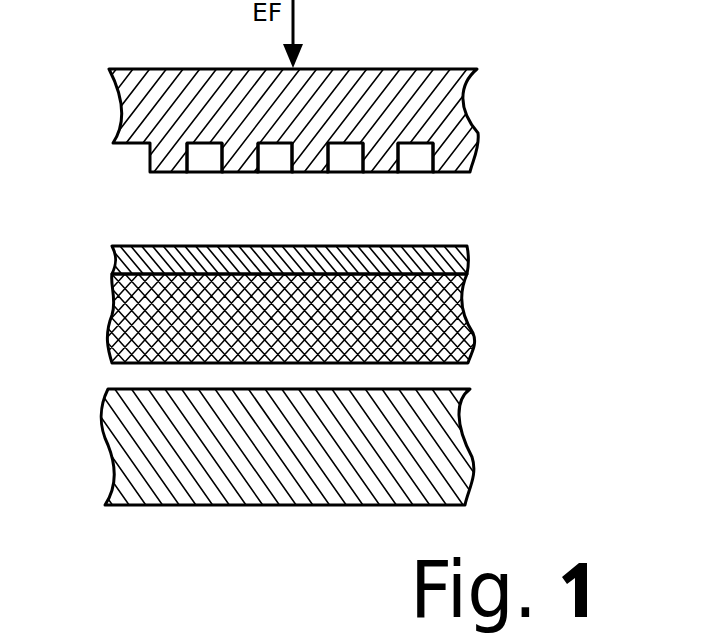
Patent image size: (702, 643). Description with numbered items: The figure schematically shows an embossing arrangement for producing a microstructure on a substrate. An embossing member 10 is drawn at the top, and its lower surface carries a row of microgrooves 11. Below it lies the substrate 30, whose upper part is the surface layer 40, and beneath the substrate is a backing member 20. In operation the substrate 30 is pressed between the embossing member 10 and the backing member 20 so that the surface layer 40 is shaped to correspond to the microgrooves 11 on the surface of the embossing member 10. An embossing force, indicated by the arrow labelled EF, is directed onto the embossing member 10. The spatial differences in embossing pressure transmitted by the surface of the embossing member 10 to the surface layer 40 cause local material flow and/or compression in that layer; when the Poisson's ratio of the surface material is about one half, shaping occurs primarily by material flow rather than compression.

The embossing member 10 is at (109, 71).
The microgrooves 11 is at (203, 162).
The backing member 20 is at (112, 488).
The substrate 30 is at (115, 352).
The surface layer 40 is at (114, 263).